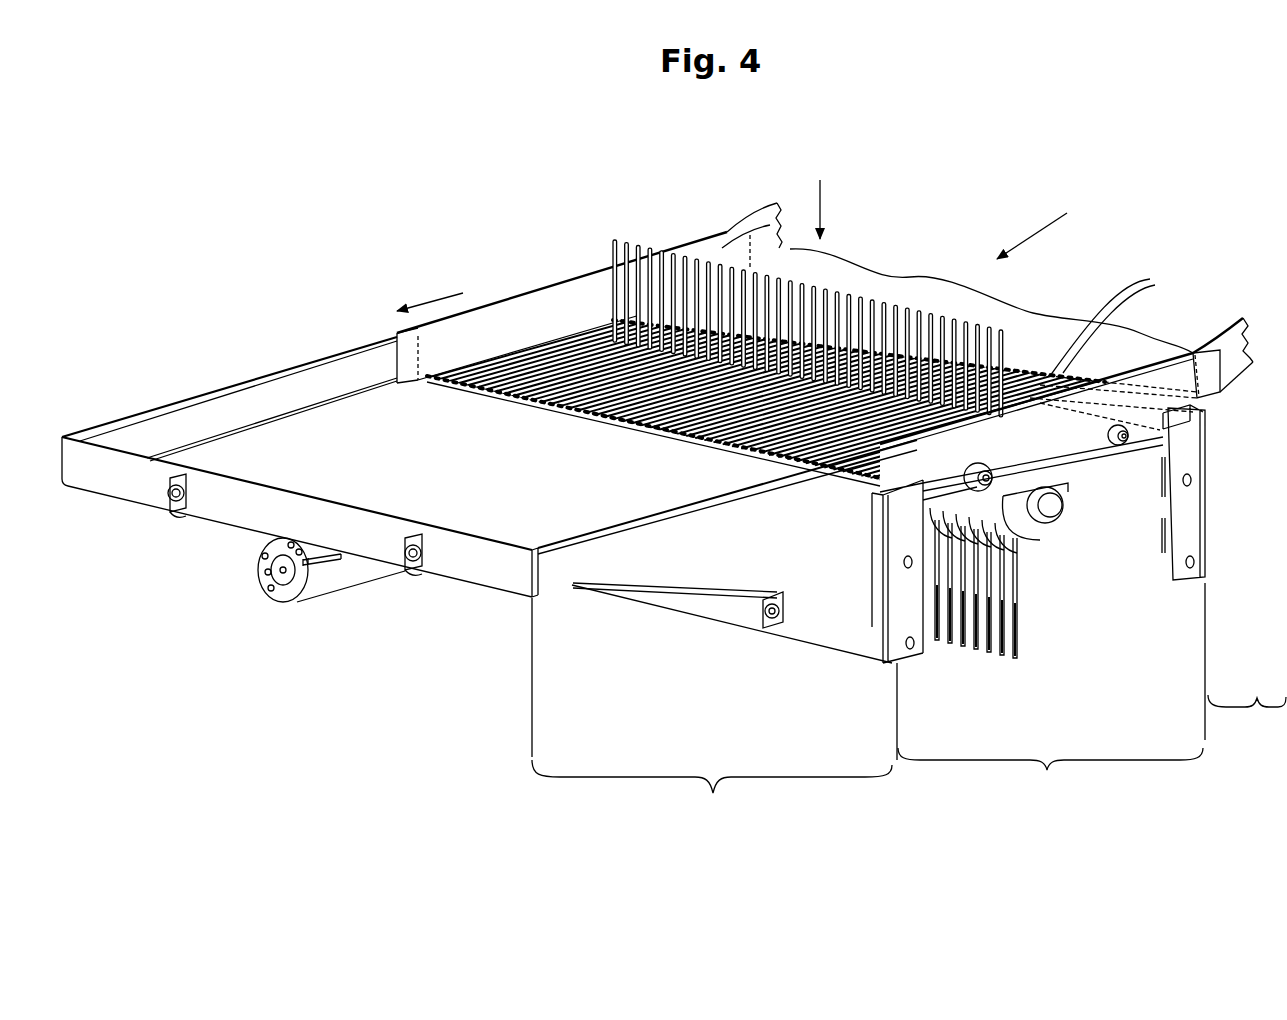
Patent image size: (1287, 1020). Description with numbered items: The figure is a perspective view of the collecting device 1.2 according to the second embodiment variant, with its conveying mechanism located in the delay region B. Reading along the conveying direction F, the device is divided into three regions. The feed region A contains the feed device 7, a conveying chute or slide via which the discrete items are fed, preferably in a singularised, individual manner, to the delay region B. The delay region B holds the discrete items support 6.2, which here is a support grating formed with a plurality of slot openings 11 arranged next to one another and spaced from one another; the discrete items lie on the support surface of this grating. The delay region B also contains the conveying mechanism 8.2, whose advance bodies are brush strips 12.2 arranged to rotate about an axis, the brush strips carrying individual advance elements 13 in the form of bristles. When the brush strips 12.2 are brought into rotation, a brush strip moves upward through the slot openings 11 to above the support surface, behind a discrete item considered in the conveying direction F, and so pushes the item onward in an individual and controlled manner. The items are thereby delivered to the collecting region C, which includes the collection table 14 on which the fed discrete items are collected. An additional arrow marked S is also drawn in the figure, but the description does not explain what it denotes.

The collecting device 1.2 is at (430, 231).
The discrete items support 6.2 is at (566, 352).
The feed device 7 is at (1060, 293).
The conveying mechanism 8.2 is at (1063, 549).
The slot openings 11 is at (1116, 319).
The brush strips 12.2 is at (1036, 633).
The advance elements 13 is at (616, 251).
The collection table 14 is at (300, 440).
The direction S is at (822, 206).
The conveying direction F is at (454, 297).
The feed region A is at (1247, 721).
The delay region B is at (1050, 773).
The collecting region C is at (712, 792).